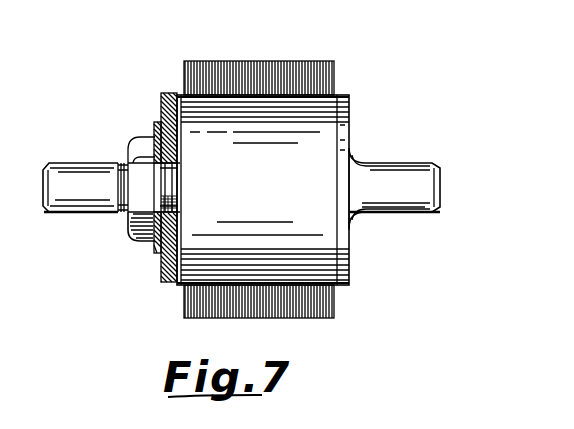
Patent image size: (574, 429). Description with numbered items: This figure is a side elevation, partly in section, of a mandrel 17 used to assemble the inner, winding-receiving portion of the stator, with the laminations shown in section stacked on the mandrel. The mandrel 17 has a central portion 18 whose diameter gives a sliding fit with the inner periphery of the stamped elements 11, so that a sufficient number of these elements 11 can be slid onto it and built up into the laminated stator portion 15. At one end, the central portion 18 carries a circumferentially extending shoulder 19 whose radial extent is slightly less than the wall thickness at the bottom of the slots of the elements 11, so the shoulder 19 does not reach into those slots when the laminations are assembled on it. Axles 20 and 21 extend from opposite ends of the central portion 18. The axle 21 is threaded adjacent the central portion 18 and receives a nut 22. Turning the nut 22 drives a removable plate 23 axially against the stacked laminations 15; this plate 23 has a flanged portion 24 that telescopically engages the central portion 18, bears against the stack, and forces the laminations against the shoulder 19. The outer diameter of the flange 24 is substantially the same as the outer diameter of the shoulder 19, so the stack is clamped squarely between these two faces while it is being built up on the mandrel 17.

The elements 11 is at (340, 307).
The laminated stator portion 15 is at (350, 63).
The mandrel 17 is at (370, 265).
The central portion 18 is at (315, 188).
The shoulder 19 is at (348, 94).
The axle 20 is at (413, 163).
The axle 21 is at (113, 163).
The nut 22 is at (141, 198).
The removable plate 23 is at (163, 268).
The flanged portion 24 is at (178, 93).